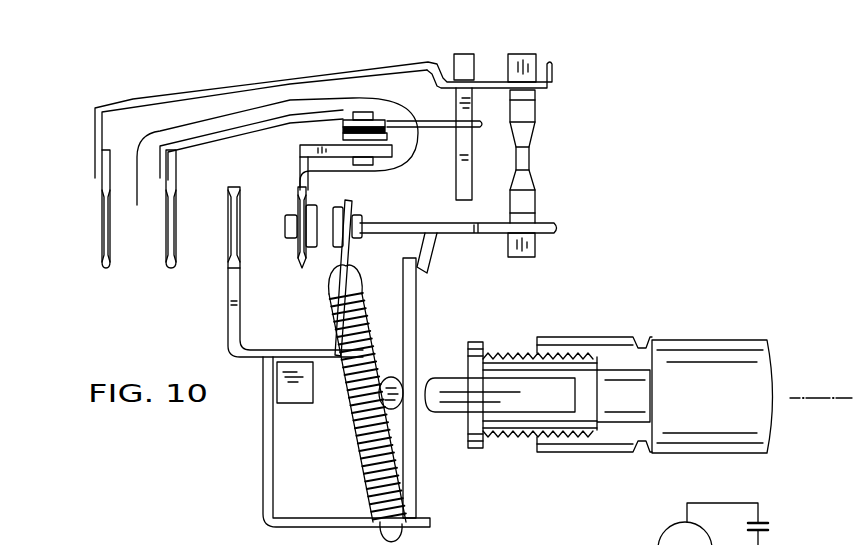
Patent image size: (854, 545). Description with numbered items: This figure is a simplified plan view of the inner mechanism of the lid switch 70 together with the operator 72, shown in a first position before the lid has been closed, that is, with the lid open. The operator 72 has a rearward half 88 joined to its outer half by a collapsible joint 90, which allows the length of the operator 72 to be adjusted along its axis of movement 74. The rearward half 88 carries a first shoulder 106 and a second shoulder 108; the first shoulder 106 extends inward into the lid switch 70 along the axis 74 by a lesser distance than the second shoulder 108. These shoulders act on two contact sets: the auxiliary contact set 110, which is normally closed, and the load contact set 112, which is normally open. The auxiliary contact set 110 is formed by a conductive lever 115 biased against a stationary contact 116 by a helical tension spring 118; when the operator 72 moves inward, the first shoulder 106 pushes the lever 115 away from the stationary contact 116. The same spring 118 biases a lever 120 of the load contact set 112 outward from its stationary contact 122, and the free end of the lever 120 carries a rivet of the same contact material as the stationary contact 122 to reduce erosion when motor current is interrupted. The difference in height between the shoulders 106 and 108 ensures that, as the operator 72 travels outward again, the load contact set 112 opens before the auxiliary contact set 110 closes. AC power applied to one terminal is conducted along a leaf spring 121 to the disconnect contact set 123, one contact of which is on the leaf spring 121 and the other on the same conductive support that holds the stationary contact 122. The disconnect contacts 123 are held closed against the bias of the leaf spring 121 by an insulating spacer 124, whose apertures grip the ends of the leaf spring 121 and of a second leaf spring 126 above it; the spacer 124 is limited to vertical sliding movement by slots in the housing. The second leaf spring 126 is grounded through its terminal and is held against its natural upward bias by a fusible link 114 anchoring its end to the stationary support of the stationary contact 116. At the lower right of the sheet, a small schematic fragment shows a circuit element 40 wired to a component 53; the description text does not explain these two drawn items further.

The lid switch 70 is at (331, 51).
The second leaf spring 126 is at (167, 88).
The leaf spring 121 is at (290, 128).
The disconnect contact set 123 is at (315, 195).
The insulating spacer 124 is at (468, 72).
The fusible link 114 is at (533, 137).
The stationary contact 122 is at (298, 236).
The load contact set 112 is at (362, 203).
The lever 120 is at (333, 316).
The auxiliary contact set 110 is at (440, 278).
The stationary contact 116 is at (434, 252).
The conductive lever 115 is at (417, 463).
The second shoulder 108 is at (383, 377).
The helical tension spring 118 is at (377, 470).
The rearward half of the operator 88 is at (480, 507).
The first shoulder 106 is at (427, 400).
The collapsible joint 90 is at (576, 324).
The operator 72 is at (717, 412).
The axis of movement 74 is at (806, 397).
The capacitor 53 is at (763, 536).
The control circuit 40 is at (685, 533).